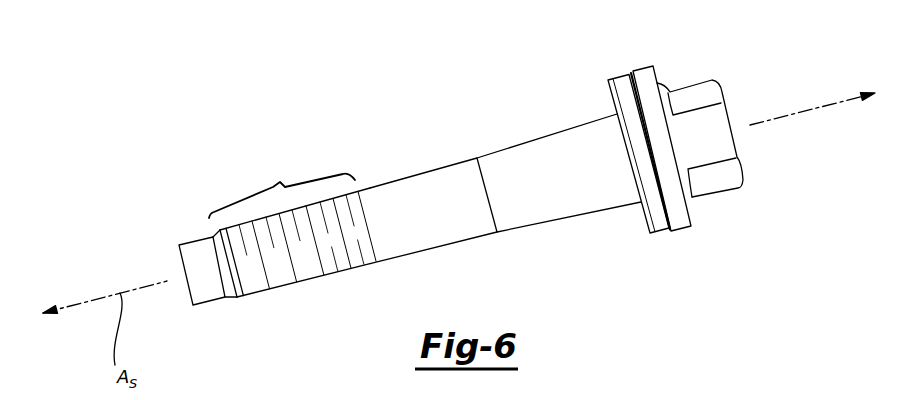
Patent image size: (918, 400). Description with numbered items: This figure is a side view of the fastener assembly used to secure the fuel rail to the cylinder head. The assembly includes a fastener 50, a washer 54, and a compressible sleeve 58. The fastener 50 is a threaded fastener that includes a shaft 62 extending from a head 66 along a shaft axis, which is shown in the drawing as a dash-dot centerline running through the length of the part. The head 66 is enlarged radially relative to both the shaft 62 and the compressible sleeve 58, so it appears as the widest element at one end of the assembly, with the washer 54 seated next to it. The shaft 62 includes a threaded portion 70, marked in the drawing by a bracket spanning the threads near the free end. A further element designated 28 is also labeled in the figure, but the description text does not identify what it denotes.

The fastener (bolt assembly) 28 is at (392, 76).
The fastener 50 is at (423, 187).
The washer 54 is at (619, 85).
The compressible sleeve 58 is at (549, 146).
The shaft 62 is at (292, 278).
The head 66 is at (687, 97).
The threaded portion 70 is at (282, 187).